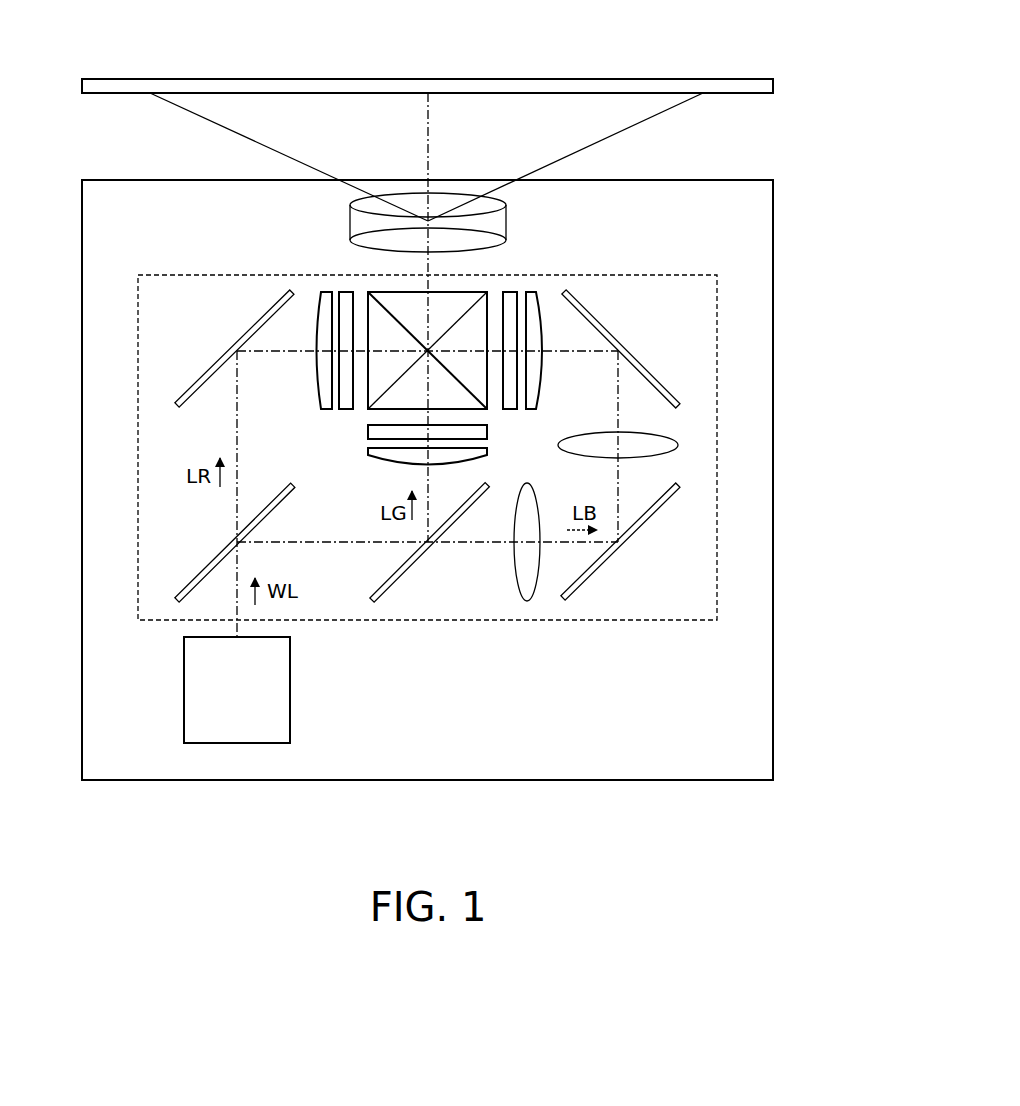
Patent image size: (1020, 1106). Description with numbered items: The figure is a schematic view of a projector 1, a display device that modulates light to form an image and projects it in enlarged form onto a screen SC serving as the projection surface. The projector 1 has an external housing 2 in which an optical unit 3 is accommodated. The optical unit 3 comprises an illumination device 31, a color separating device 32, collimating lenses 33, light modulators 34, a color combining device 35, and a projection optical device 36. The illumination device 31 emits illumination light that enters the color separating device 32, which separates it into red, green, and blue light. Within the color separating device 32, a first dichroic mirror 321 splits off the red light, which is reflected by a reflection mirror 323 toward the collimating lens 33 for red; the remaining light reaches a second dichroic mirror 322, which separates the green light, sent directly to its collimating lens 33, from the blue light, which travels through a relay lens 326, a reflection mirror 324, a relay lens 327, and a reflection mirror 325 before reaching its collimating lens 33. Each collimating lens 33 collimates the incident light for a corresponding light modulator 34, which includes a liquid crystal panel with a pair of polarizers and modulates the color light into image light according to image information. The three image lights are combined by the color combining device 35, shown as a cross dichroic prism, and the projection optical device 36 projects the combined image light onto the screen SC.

The screen SC is at (740, 79).
The projector 1 is at (764, 155).
The external housing 2 is at (774, 402).
The optical unit 3 is at (643, 676).
The illumination device 31 is at (290, 688).
The color separating device 32 is at (438, 621).
The dichroic mirror 321 is at (212, 572).
The dichroic mirror 322 is at (408, 570).
The reflection mirror 323 is at (214, 364).
The reflection mirror 324 is at (642, 527).
The reflection mirror 325 is at (646, 368).
The relay lens 326 is at (532, 585).
The relay lens 327 is at (648, 436).
The collimating lens 33 is at (325, 291).
The light modulator 34 is at (345, 291).
The color combining device 35 is at (443, 300).
The projection optical device 36 is at (507, 219).